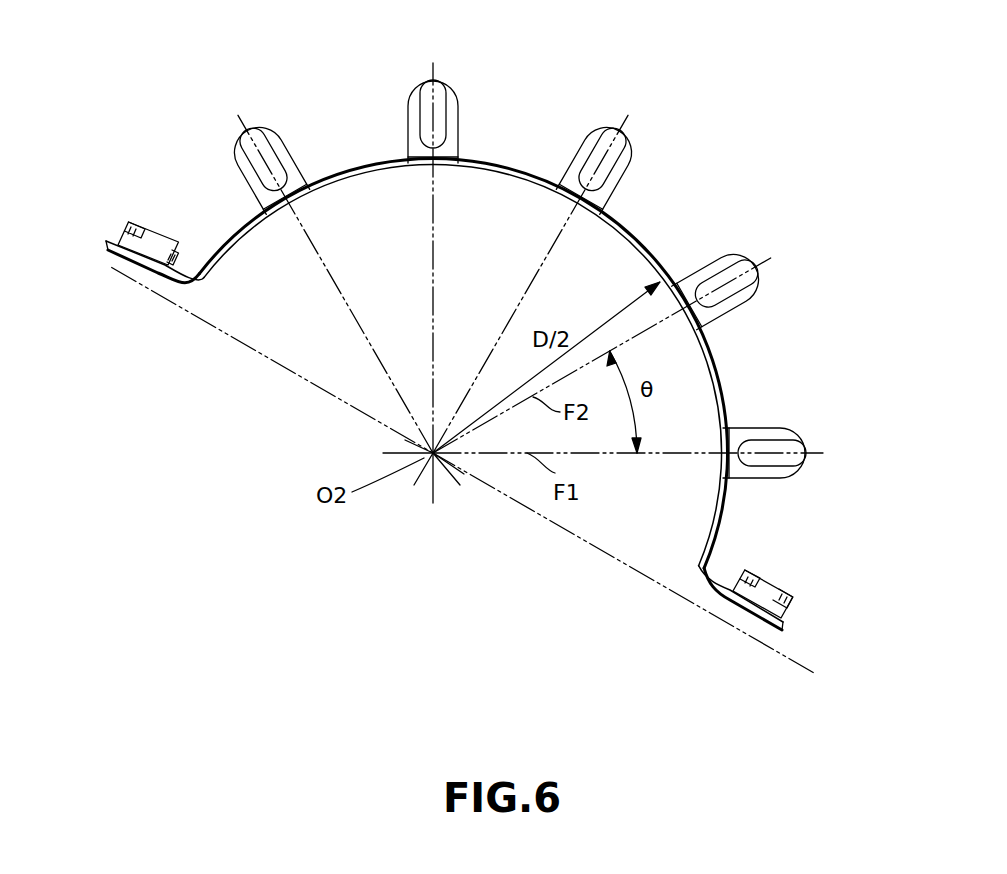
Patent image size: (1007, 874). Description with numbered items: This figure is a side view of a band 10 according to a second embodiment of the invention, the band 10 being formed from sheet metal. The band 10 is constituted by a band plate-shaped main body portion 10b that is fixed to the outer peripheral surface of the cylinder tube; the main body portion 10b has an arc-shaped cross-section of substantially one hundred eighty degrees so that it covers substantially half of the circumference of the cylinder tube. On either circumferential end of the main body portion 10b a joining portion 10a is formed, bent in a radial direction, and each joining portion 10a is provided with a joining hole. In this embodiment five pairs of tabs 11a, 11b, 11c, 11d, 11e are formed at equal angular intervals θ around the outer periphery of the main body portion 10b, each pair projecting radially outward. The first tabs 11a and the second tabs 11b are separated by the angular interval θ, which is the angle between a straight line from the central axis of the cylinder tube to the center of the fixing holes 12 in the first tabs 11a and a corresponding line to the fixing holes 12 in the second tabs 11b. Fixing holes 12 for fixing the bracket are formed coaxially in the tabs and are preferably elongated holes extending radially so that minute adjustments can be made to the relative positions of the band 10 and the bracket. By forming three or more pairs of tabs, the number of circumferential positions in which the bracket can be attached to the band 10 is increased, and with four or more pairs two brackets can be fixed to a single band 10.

The band 10 is at (222, 240).
The joining portion 10a is at (118, 228).
The main body portion 10b is at (363, 165).
The first tabs 11a is at (765, 480).
The second tabs 11b is at (737, 307).
The tabs 11c is at (597, 128).
The tabs 11d is at (407, 102).
The tabs 11e is at (262, 132).
The fixing holes 12 is at (591, 165).